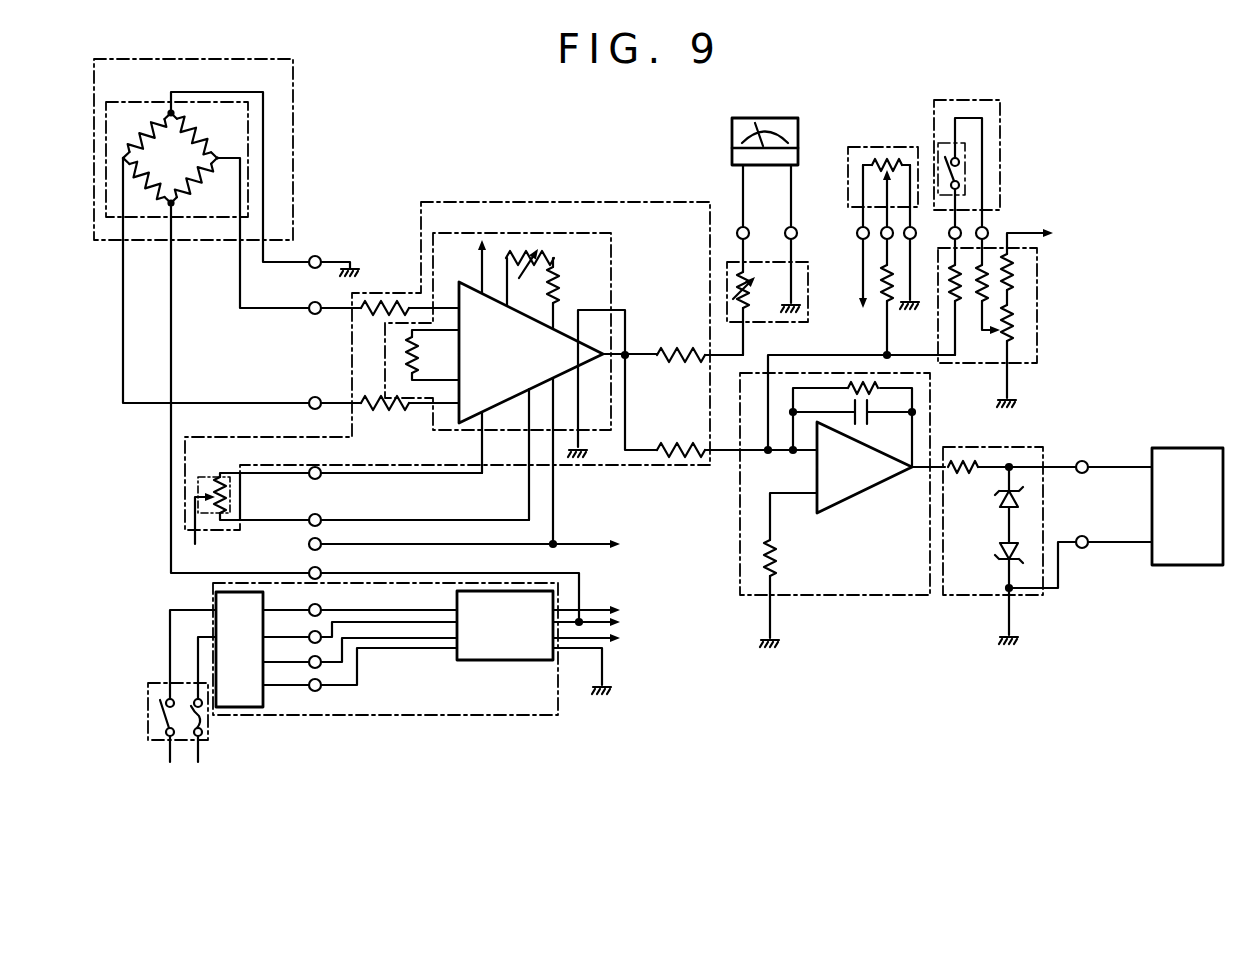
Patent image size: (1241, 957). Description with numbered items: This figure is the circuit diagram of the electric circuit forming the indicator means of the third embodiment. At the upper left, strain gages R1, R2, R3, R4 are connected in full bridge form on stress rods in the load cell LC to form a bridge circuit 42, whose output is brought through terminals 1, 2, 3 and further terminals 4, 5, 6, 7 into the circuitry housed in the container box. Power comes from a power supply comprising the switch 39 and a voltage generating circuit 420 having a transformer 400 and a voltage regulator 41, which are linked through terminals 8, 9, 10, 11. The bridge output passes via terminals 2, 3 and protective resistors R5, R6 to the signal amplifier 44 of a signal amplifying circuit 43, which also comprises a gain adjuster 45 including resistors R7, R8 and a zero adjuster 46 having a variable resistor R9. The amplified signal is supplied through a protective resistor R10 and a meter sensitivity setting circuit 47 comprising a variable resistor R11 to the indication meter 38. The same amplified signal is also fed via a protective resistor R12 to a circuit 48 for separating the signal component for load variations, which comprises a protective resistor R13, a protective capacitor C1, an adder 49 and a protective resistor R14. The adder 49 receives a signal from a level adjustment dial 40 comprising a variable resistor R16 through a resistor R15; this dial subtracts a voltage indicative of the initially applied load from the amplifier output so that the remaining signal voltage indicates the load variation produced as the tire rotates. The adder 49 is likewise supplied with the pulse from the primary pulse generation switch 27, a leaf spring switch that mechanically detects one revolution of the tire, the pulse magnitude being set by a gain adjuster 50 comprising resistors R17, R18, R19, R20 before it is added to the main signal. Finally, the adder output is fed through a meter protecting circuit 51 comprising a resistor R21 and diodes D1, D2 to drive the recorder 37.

The load cell LC is at (271, 74).
The bridge circuit 42 is at (219, 157).
The strain gage R1 is at (144, 126).
The strain gage R2 is at (196, 128).
The strain gage R3 is at (208, 183).
The strain gage R4 is at (162, 185).
The terminal 1 is at (316, 269).
The terminal 2 is at (317, 315).
The terminal 3 is at (319, 397).
The terminal 4 is at (319, 479).
The terminal 5 is at (319, 514).
The terminal 6 is at (309, 541).
The terminal 7 is at (319, 568).
The terminal 8 is at (320, 604).
The terminal 9 is at (309, 634).
The terminal 10 is at (309, 659).
The terminal 11 is at (309, 682).
The signal amplifying circuit 43 is at (547, 212).
The signal amplifier 44 is at (542, 392).
The gain adjuster 45 is at (600, 277).
The zero adjuster 46 is at (236, 478).
The protective resistor R5 is at (383, 318).
The protective resistor R6 is at (391, 413).
The resistor R7 is at (432, 355).
The resistor R8 is at (520, 248).
The variable resistor R9 is at (216, 484).
The protective resistor R10 is at (681, 347).
The protective resistor R12 is at (681, 450).
The indication meter 38 is at (771, 118).
The meter sensitivity setting circuit 47 is at (781, 288).
The variable resistor R11 is at (746, 274).
The level adjustment dial 40 is at (884, 163).
The variable resistor R16 is at (896, 158).
The resistor R15 is at (884, 304).
The resistor R17 is at (950, 295).
The resistor R18 is at (980, 320).
The primary pulse generation switch 27 is at (963, 108).
The gain adjuster 50 is at (988, 307).
The resistor R19 is at (1012, 262).
The resistor R20 is at (1015, 332).
The circuit for separating a signal component for load variations 48 is at (845, 575).
The adder 49 is at (864, 467).
The protective resistor R13 is at (850, 386).
The protective capacitor C1 is at (868, 412).
The protective resistor R14 is at (788, 570).
The meter protecting circuit 51 is at (1009, 528).
The resistor R21 is at (966, 472).
The diode D1 is at (997, 504).
The diode D2 is at (1000, 549).
The recorder 37 is at (1187, 506).
The voltage regulator 41 is at (505, 625).
The transformer 400 is at (239, 649).
The voltage generating circuit 420 is at (492, 690).
The switch 39 is at (207, 716).